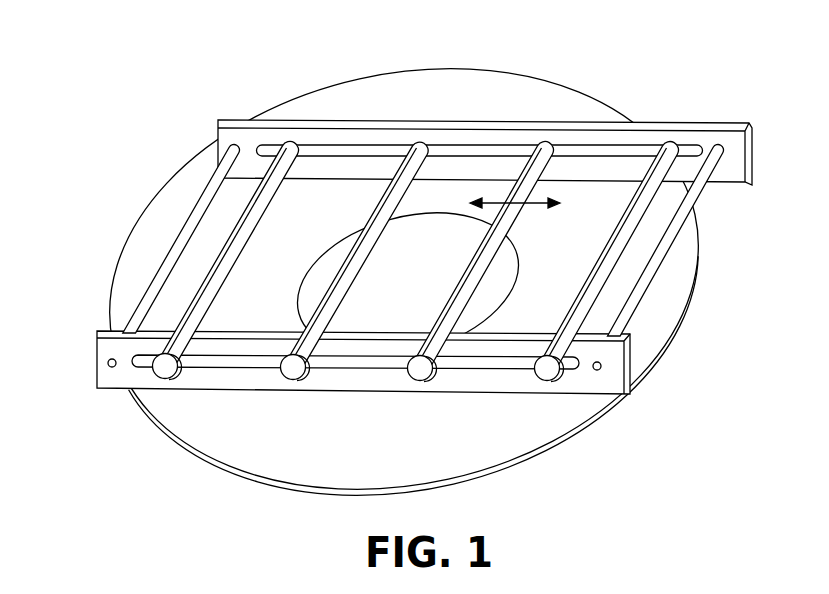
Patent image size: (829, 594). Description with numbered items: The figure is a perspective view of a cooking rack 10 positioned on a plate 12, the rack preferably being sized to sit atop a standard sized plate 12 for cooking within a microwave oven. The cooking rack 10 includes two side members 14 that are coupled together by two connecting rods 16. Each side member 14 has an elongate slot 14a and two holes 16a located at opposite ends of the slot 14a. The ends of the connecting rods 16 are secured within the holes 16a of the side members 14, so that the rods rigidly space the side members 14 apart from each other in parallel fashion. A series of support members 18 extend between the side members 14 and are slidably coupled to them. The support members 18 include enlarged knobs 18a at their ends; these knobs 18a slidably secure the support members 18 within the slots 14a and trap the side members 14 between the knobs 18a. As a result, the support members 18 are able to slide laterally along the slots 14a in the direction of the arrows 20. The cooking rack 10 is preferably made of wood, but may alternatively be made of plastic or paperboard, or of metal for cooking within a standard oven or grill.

The cooking rack 10 is at (613, 73).
The plate 12 is at (558, 418).
The side member 14 is at (226, 119).
The elongate slot 14a is at (343, 157).
The connecting rod 16 is at (192, 212).
The hole 16a is at (104, 363).
The support member 18 is at (246, 246).
The enlarged knob 18a is at (162, 368).
The arrow 20 is at (534, 204).